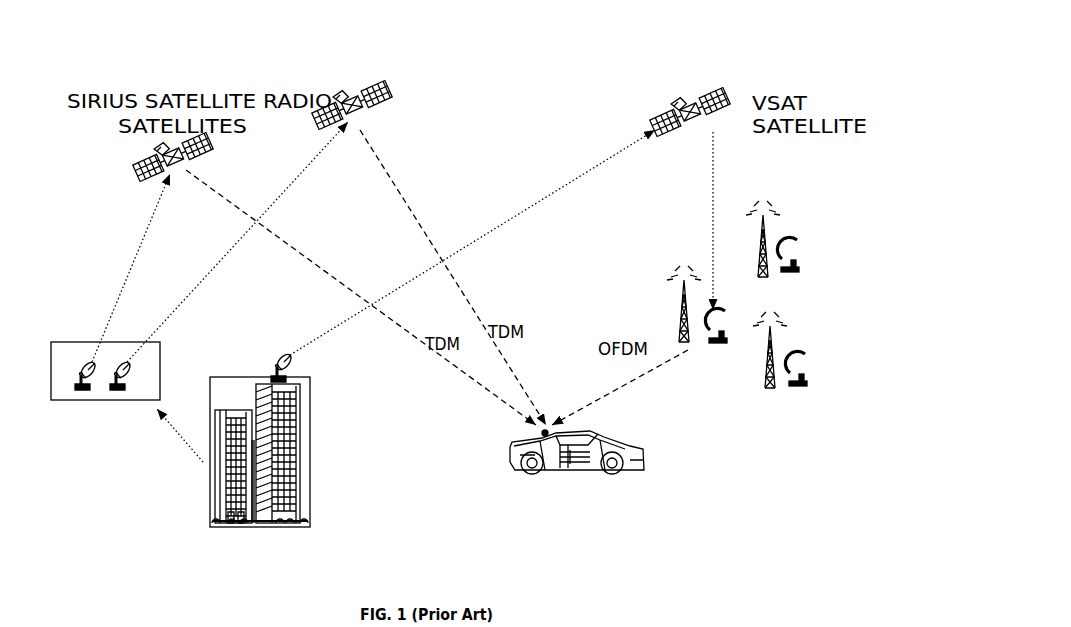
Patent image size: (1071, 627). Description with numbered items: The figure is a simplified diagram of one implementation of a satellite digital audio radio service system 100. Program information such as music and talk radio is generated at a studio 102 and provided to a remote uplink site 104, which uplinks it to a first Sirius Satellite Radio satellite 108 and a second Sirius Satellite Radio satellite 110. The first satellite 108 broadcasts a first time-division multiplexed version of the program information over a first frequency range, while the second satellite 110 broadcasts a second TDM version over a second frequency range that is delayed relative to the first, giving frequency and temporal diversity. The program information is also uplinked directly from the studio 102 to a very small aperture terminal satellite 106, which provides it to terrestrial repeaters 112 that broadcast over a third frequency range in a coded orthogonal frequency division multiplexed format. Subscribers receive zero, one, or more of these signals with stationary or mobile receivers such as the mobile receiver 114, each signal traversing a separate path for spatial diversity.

The SDARS system 100 is at (878, 21).
The studio 102 is at (210, 525).
The remote uplink site 104 is at (75, 342).
The VSAT satellite 106 is at (688, 102).
The first Sirius Satellite Radio satellite 108 is at (137, 165).
The second Sirius Satellite Radio satellite 110 is at (368, 85).
The terrestrial repeaters 112 is at (672, 265).
The mobile receiver 114 is at (641, 471).